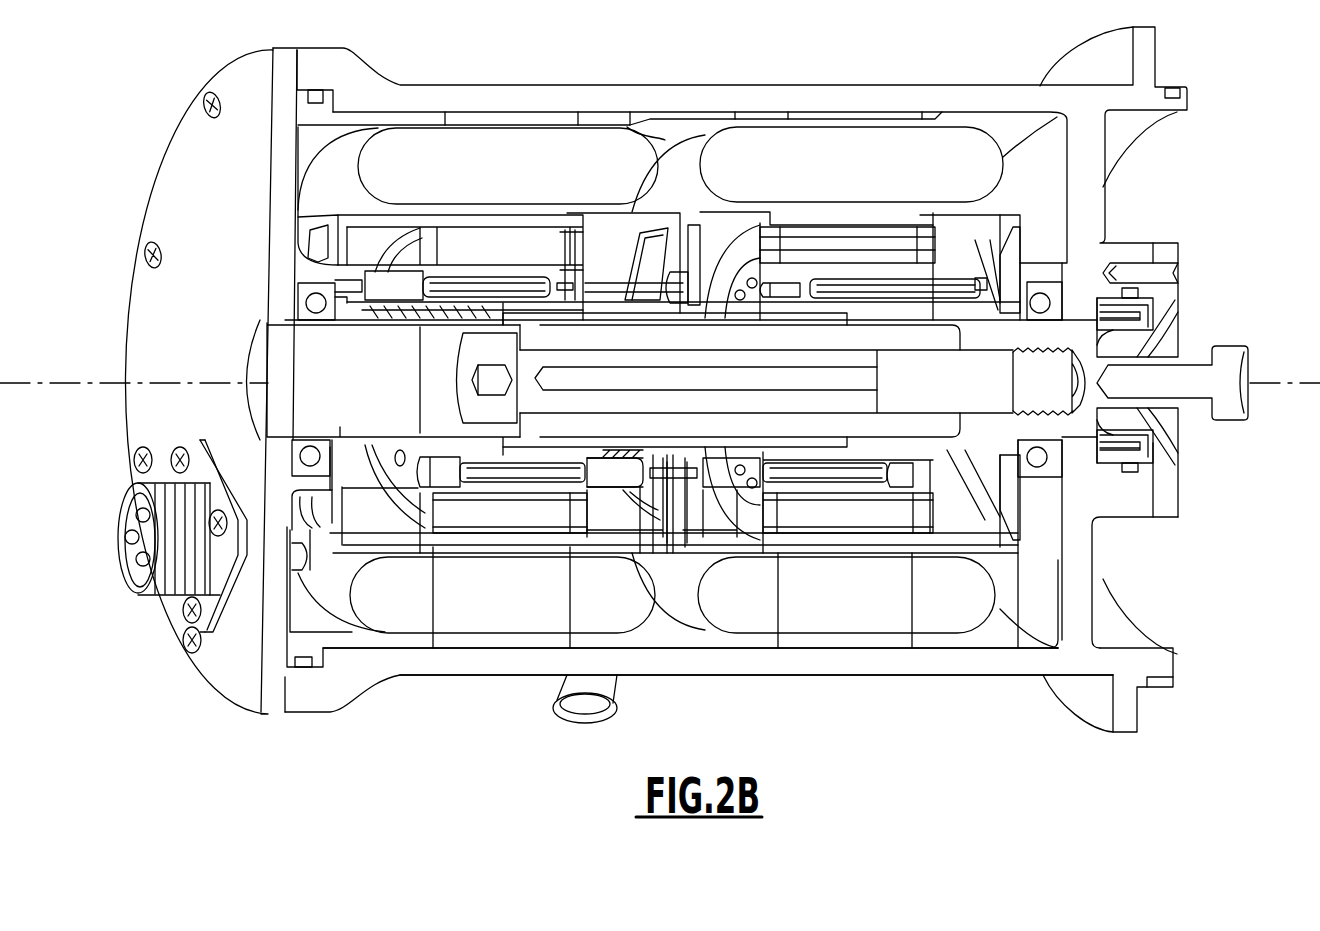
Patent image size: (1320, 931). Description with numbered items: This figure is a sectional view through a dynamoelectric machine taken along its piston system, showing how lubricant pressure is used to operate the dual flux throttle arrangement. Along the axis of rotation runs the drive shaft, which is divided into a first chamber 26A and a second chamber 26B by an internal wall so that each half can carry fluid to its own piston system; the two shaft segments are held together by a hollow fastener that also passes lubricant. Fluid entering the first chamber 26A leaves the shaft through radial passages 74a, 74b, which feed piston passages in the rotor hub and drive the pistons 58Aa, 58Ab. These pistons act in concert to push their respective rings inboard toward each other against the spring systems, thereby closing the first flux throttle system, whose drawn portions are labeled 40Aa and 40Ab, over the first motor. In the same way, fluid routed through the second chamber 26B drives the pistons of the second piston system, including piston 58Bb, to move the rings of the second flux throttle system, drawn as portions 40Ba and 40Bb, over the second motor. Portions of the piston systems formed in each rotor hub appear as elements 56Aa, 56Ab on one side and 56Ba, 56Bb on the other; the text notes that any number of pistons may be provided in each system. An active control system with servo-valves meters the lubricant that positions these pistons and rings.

The first chamber 26A is at (800, 425).
The second chamber 26B is at (428, 421).
The first stator core portion 40Aa is at (1048, 578).
The second stator core portion 40Ab is at (698, 523).
The third stator core portion 40Ba is at (613, 518).
The fourth stator core portion 40Bb is at (353, 523).
The first permanent magnet 56Aa is at (890, 290).
The second permanent magnet 56Ab is at (867, 477).
The third permanent magnet 56Ba is at (530, 285).
The fourth permanent magnet 56Bb is at (523, 477).
The piston 58Aa is at (972, 282).
The piston 58Ab is at (730, 473).
The piston 58Bb is at (433, 662).
The radial passage 74a is at (880, 328).
The radial passage 74b is at (880, 437).